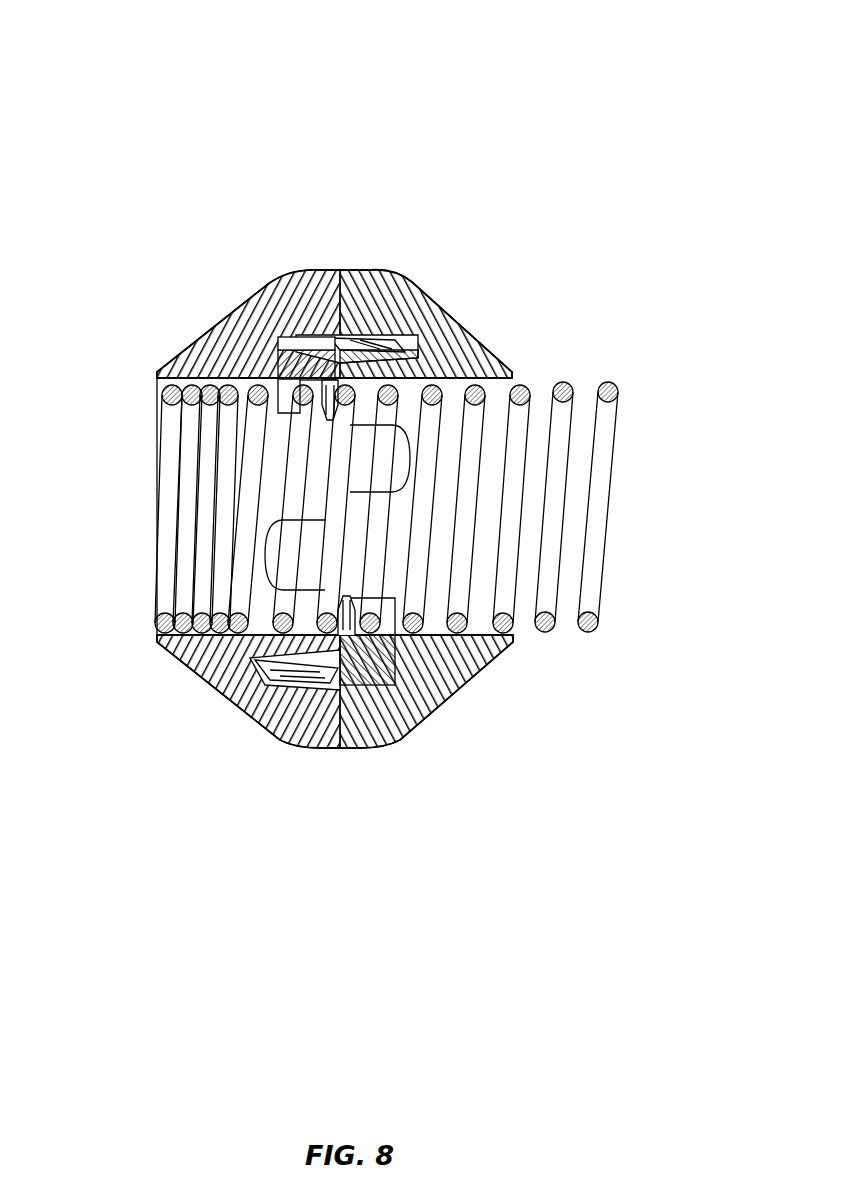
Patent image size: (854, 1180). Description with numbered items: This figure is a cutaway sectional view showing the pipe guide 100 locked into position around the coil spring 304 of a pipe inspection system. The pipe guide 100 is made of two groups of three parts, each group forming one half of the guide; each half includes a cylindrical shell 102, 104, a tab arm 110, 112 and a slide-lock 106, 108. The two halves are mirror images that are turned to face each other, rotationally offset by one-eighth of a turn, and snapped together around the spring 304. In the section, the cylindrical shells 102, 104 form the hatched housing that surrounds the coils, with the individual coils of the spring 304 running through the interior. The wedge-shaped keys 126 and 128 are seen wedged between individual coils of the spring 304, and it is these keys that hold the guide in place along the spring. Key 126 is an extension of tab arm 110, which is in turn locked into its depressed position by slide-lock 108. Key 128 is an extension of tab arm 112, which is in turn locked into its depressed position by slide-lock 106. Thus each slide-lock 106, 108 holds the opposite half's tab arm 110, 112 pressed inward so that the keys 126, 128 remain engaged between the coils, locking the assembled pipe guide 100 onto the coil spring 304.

The pipe guide 100 is at (351, 88).
The cylindrical shell 102 is at (209, 330).
The cylindrical shell 104 is at (455, 321).
The slide-lock 106 is at (278, 748).
The slide-lock 108 is at (407, 330).
The tab arm 110 is at (272, 342).
The tab arm 112 is at (410, 746).
The wedge-shaped key 126 is at (328, 418).
The wedge-shaped key 128 is at (345, 600).
The coil spring 304 is at (541, 632).